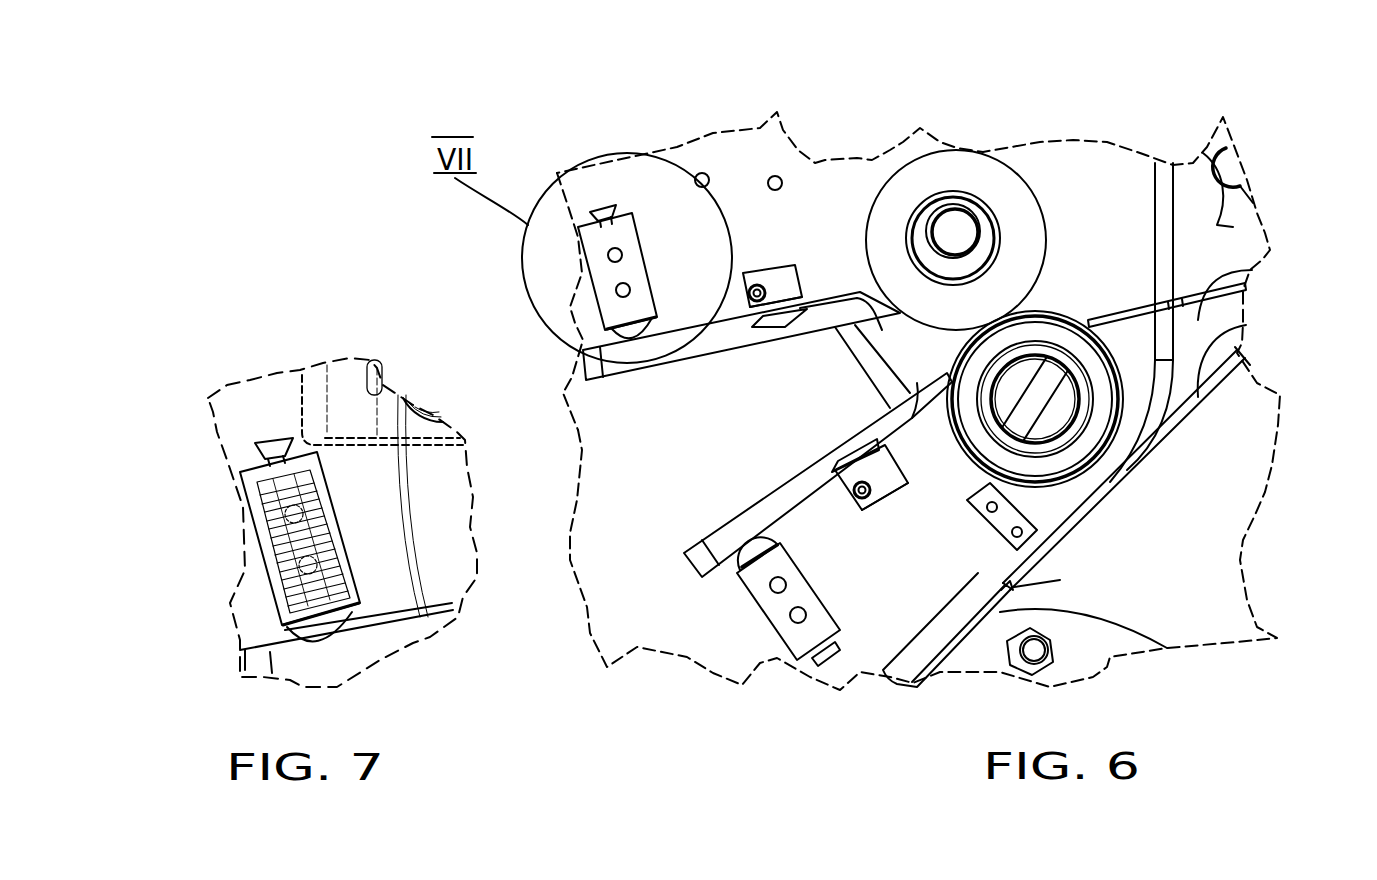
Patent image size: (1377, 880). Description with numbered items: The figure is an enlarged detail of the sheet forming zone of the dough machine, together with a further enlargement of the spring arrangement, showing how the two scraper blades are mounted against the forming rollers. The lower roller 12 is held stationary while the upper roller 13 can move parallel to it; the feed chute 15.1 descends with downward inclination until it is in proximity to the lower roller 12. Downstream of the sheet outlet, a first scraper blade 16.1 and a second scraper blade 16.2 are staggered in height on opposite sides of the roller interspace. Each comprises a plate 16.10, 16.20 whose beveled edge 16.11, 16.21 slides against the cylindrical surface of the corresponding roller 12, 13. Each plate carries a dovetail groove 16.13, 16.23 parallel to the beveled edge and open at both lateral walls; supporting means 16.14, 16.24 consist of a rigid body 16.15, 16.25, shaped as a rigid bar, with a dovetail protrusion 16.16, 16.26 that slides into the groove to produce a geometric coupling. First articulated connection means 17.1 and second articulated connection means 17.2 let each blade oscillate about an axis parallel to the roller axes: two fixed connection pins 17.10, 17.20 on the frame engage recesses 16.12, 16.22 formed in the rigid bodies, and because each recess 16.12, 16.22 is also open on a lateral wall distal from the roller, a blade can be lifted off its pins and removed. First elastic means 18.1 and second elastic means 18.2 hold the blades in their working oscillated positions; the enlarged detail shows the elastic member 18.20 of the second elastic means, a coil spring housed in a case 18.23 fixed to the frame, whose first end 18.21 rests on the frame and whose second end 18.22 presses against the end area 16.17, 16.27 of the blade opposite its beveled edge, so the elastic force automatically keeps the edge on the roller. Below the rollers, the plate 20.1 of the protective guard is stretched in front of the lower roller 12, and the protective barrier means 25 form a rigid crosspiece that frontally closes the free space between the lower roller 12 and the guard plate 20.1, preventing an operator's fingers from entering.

In FIG. 6, the lower roller 12 is at (1090, 443).
In FIG. 6, the upper roller 13 is at (997, 183).
In FIG. 6, the feed chute 15.1 is at (1200, 277).
In FIG. 6, the first scraper blade 16.1 is at (770, 569).
In FIG. 6, the second scraper blade 16.2 is at (657, 242).
In FIG. 6, the plate 16.10 is at (787, 464).
In FIG. 6, the beveled edge 16.11 is at (1000, 538).
In FIG. 6, the recess 16.12 is at (857, 500).
In FIG. 6, the dovetail groove 16.13 is at (850, 449).
In FIG. 6, the supporting means 16.14 is at (882, 514).
In FIG. 6, the rigid body 16.15 is at (887, 475).
In FIG. 6, the dovetail protrusion 16.16 is at (913, 402).
In FIG. 6, the end area 16.17 is at (733, 527).
In FIG. 6, the plate 16.20 is at (764, 369).
In FIG. 6, the beveled edge 16.21 is at (850, 290).
In FIG. 6, the recess 16.22 is at (742, 306).
In FIG. 6, the dovetail groove 16.23 is at (787, 329).
In FIG. 6, the supporting means 16.24 is at (766, 264).
In FIG. 6, the rigid body 16.25 is at (783, 263).
In FIG. 6, the dovetail protrusion 16.26 is at (882, 330).
In FIG. 7, the end area 16.27 is at (343, 663).
In FIG. 6, the end area 16.27 is at (641, 353).
In FIG. 6, the first articulated connection means 17.1 is at (861, 593).
In FIG. 6, the second articulated connection means 17.2 is at (759, 224).
In FIG. 6, the connection pin 17.10 is at (851, 490).
In FIG. 6, the connection pin 17.20 is at (748, 293).
In FIG. 6, the first elastic means 18.1 is at (768, 631).
In FIG. 7, the second elastic means 18.2 is at (336, 539).
In FIG. 6, the second elastic means 18.2 is at (584, 258).
In FIG. 7, the elastic member 18.20 is at (347, 578).
In FIG. 7, the first end 18.21 is at (230, 373).
In FIG. 7, the second end 18.22 is at (275, 621).
In FIG. 7, the case 18.23 is at (343, 532).
In FIG. 6, the plate 20.1 is at (1193, 390).
In FIG. 6, the protective barrier means 25 is at (1018, 586).